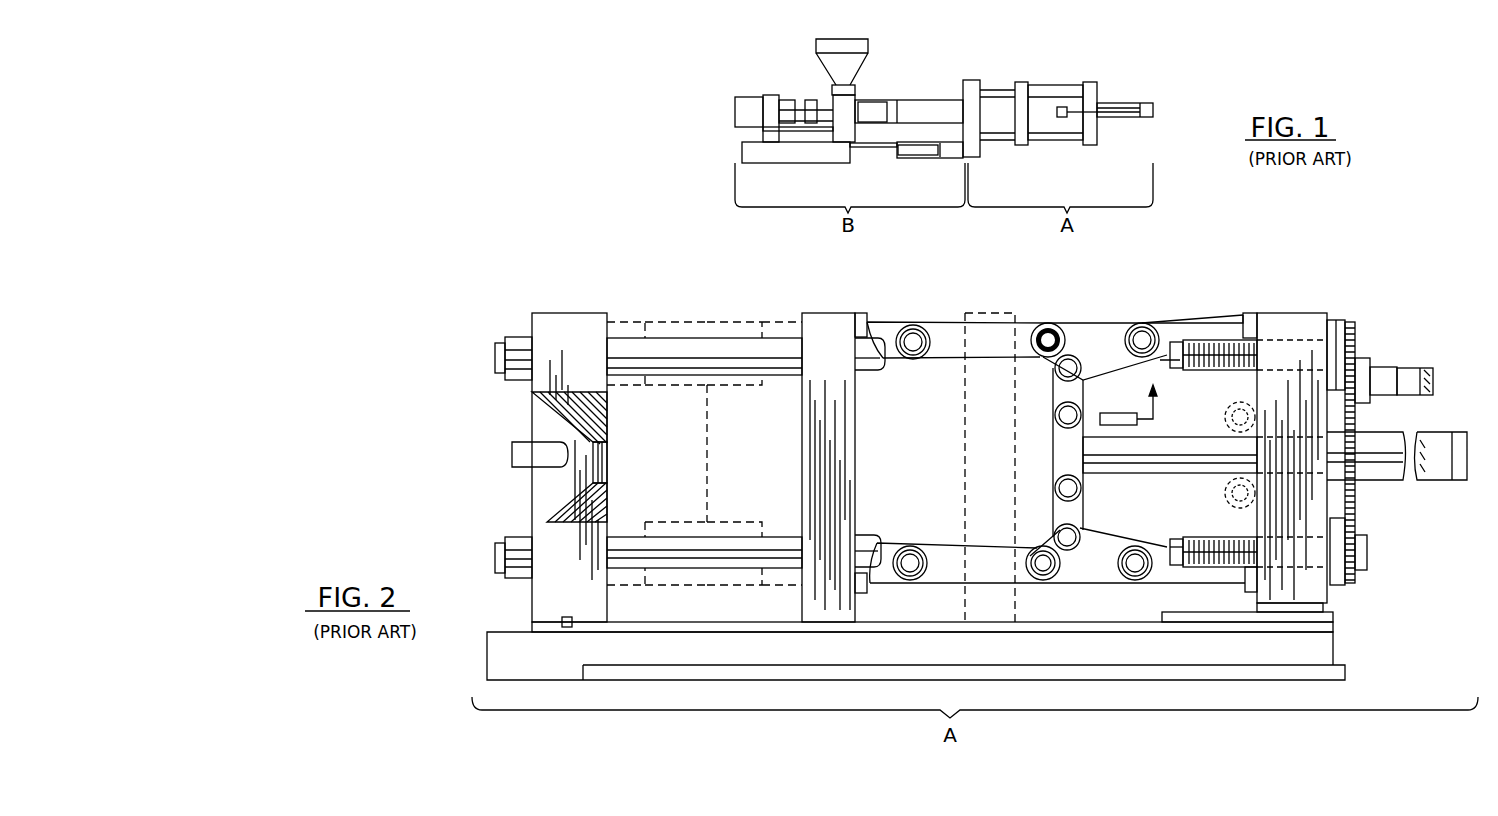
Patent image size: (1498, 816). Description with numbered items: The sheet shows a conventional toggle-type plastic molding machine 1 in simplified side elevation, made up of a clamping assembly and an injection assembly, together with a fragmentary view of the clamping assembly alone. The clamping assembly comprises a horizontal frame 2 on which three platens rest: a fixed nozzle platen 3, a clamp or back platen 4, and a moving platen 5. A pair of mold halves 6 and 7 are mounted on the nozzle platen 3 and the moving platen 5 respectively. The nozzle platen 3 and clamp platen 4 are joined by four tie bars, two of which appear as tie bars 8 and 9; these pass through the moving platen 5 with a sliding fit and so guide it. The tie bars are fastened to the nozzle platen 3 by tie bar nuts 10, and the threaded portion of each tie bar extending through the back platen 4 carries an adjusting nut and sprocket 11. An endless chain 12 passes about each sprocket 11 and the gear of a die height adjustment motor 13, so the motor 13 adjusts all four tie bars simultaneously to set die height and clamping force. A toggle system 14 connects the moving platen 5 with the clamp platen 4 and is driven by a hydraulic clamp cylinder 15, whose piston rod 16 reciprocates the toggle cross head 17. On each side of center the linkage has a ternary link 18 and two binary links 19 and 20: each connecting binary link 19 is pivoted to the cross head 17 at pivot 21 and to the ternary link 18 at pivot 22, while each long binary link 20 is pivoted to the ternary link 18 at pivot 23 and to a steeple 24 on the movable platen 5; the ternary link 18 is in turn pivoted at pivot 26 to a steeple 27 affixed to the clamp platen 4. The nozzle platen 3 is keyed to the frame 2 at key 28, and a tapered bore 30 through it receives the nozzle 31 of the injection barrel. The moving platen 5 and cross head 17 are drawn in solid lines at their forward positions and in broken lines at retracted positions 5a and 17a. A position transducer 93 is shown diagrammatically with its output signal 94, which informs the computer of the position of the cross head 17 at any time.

In FIG. 1, the toggle-type plastic molding machine 1 is at (902, 91).
In FIG. 2, the horizontal frame 2 is at (905, 650).
In FIG. 1, the nozzle platen 3 is at (970, 80).
In FIG. 2, the nozzle platen 3 is at (568, 317).
In FIG. 1, the clamp platen 4 is at (1088, 82).
In FIG. 2, the clamp platen 4 is at (1293, 313).
In FIG. 1, the moving platen 5 is at (1022, 82).
In FIG. 2, the moving platen 5 is at (823, 313).
In FIG. 2, the retracted position of moving platen 5a is at (988, 312).
In FIG. 2, the mold half 6 is at (646, 461).
In FIG. 2, the mold half 7 is at (740, 461).
In FIG. 2, the tie bar 8 is at (707, 340).
In FIG. 2, the tie bar 9 is at (695, 565).
In FIG. 2, the tie bar nut 10 is at (512, 332).
In FIG. 2, the adjusting nut and sprocket 11 is at (1337, 322).
In FIG. 2, the endless chain 12 is at (1357, 513).
In FIG. 2, the die height adjustment motor 13 is at (1383, 367).
In FIG. 2, the toggle system 14 is at (1053, 455).
In FIG. 1, the hydraulic clamp cylinder 15 is at (1115, 101).
In FIG. 2, the hydraulic clamp cylinder 15 is at (1432, 438).
In FIG. 2, the piston rod 16 is at (1170, 468).
In FIG. 2, the toggle cross head 17 is at (1060, 462).
In FIG. 2, the retracted position of cross head 17a is at (1225, 432).
In FIG. 2, the ternary link 18 is at (1092, 327).
In FIG. 2, the connecting binary link 19 is at (1066, 398).
In FIG. 2, the long binary link 20 is at (948, 328).
In FIG. 2, the pivot 21 is at (1056, 414).
In FIG. 2, the pivot 22 is at (1056, 373).
In FIG. 2, the pivot 23 is at (1048, 323).
In FIG. 2, the steeple 24 is at (880, 322).
In FIG. 2, the pivot 26 is at (1147, 324).
In FIG. 2, the steeple 27 is at (1217, 322).
In FIG. 2, the key 28 is at (566, 605).
In FIG. 2, the tapered bore 30 is at (570, 502).
In FIG. 2, the nozzle 31 is at (518, 446).
In FIG. 2, the position transducer 93 is at (1120, 413).
In FIG. 2, the output signal 94 is at (1175, 402).